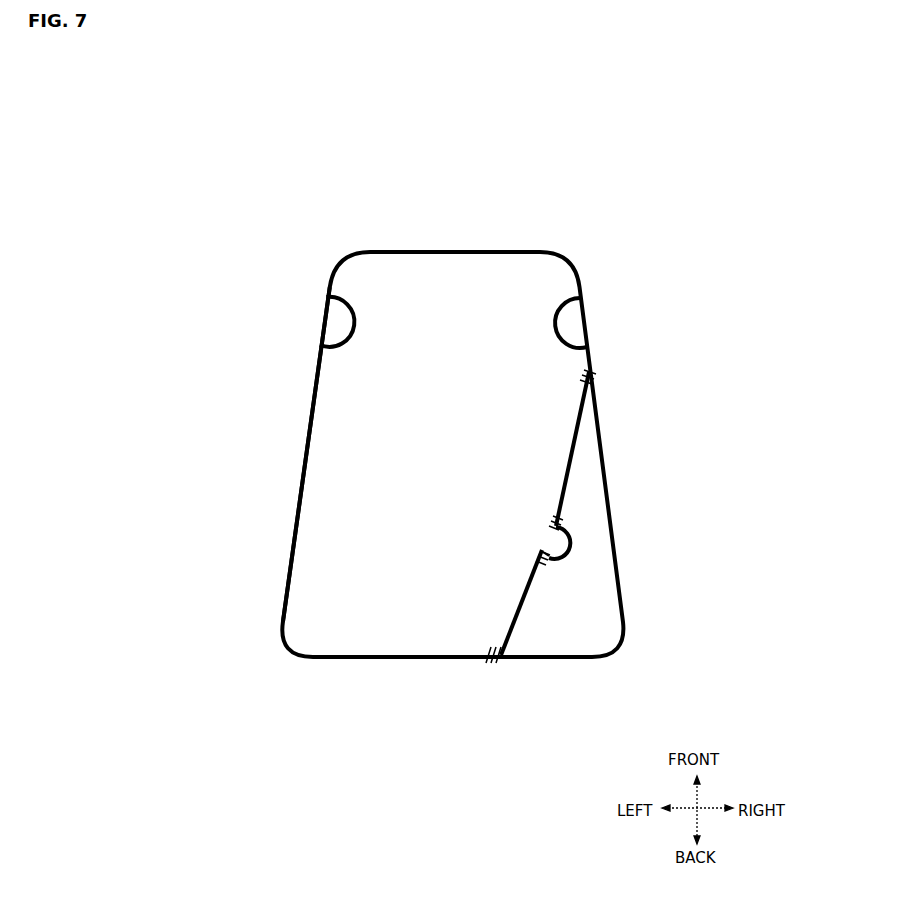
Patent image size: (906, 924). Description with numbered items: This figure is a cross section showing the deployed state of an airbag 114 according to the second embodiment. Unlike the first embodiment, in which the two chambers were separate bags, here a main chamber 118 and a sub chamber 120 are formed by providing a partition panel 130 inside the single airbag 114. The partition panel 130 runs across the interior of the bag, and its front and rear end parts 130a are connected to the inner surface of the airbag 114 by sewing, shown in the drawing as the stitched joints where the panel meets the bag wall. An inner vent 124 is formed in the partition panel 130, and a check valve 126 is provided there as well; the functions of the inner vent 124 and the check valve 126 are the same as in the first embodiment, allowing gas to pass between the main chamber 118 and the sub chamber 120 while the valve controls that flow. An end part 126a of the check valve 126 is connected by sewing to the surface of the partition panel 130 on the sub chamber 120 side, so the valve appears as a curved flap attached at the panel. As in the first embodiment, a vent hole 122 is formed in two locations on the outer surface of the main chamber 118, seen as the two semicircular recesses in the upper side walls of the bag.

The airbag 114 is at (331, 242).
The main chamber 118 is at (320, 385).
The sub chamber 120 is at (577, 660).
The vent hole 122 is at (324, 318).
The inner vent 124 is at (542, 538).
The check valve 126 is at (568, 541).
The end part of the check valve 126a is at (562, 509).
The partition panel 130 is at (526, 602).
The front and rear end parts of the partition panel 130a is at (593, 377).